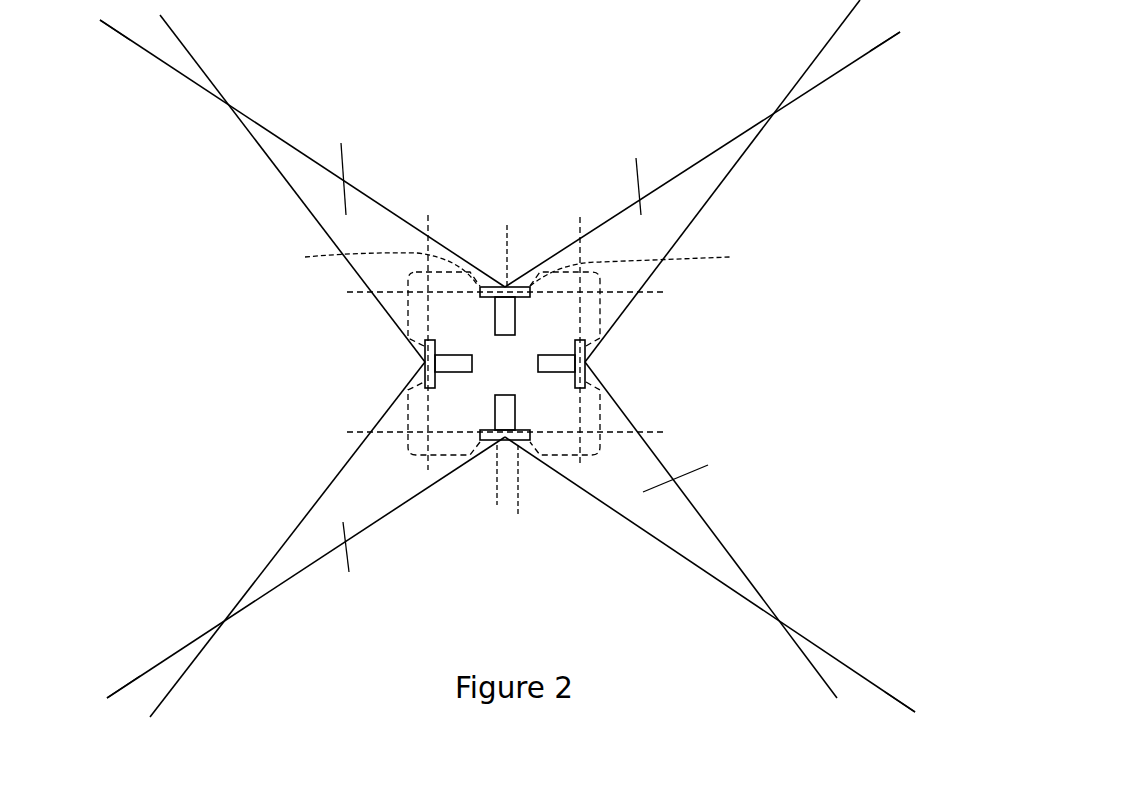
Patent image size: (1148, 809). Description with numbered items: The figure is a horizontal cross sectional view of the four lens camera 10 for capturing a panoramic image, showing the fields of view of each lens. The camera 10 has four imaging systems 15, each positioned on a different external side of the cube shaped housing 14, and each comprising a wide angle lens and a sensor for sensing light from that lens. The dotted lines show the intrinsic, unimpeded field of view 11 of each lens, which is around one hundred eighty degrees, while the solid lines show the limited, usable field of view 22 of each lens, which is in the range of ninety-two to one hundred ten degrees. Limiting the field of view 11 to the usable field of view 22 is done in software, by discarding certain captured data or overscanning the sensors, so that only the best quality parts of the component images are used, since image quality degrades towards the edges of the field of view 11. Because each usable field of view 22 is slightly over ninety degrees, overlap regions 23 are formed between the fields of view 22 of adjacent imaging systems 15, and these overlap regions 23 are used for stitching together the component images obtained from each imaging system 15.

The camera 10 is at (398, 305).
The field of view 11 is at (712, 300).
The housing 14 is at (417, 455).
The imaging system 15 is at (483, 277).
The usable field of view 22 is at (280, 182).
The overlap region 23 is at (163, 42).